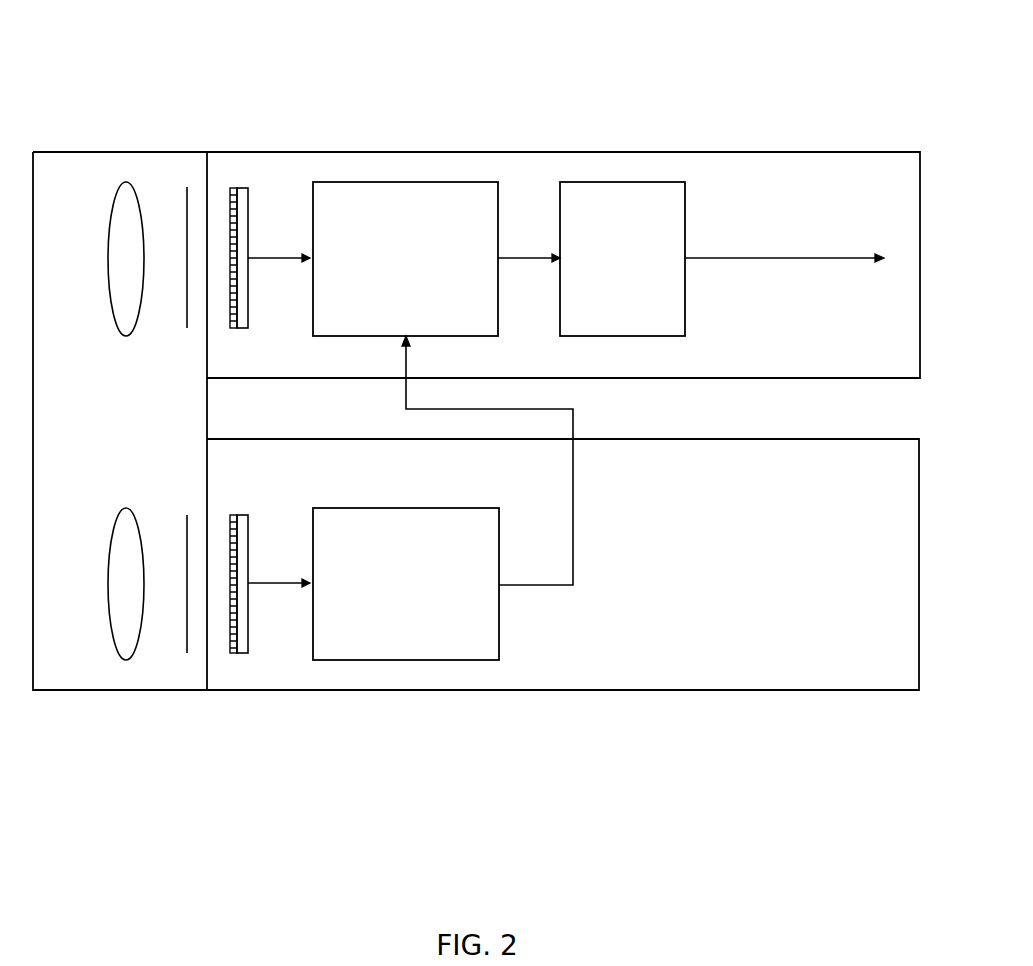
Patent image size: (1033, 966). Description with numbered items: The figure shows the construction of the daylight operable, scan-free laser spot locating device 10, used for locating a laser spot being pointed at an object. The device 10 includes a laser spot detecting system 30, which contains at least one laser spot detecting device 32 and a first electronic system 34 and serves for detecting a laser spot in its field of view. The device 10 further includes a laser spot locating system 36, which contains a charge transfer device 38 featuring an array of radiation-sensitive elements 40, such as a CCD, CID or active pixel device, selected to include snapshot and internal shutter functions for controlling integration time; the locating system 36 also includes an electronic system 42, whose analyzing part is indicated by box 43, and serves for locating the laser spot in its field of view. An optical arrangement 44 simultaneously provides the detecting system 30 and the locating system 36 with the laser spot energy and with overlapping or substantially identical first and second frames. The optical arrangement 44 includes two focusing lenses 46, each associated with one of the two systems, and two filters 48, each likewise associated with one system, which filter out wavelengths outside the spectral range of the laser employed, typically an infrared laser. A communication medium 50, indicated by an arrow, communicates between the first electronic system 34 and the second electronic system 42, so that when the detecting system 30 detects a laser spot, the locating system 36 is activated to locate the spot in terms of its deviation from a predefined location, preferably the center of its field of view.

The daylight operable laser spot locating device 10 is at (842, 34).
The laser spot detecting system 30 is at (768, 680).
The laser spot detecting device 32 is at (232, 532).
The first electronic system 34 is at (399, 643).
The laser spot locating system 36 is at (880, 345).
The charge transfer device 38 is at (232, 327).
The array of radiation-sensitive elements 40 is at (230, 190).
The electronic system 42 is at (585, 203).
The analyzing part of electronic system 43 is at (643, 203).
The optical arrangement 44 is at (54, 642).
The focusing lens 46 is at (115, 297).
The filter 48 is at (187, 297).
The communication medium 50 is at (573, 550).